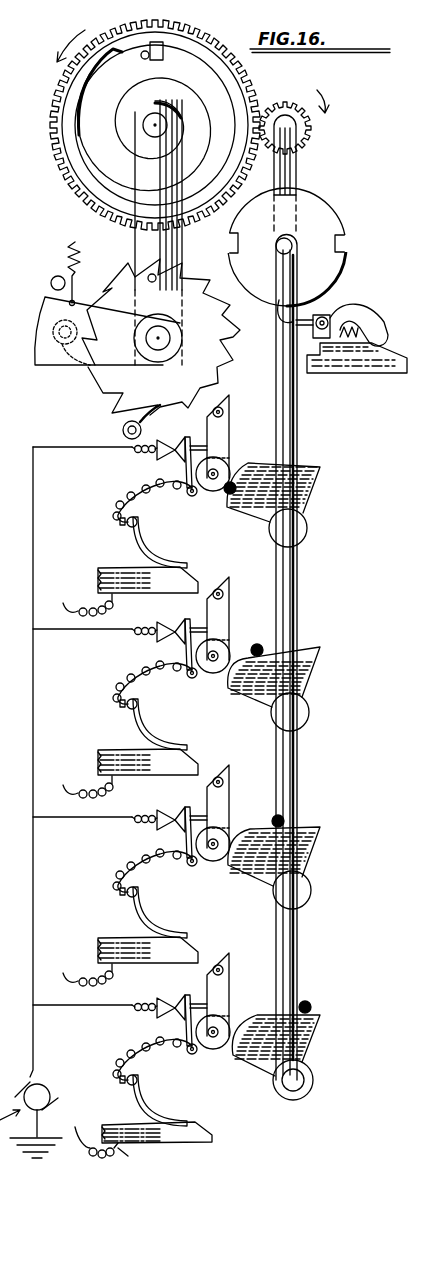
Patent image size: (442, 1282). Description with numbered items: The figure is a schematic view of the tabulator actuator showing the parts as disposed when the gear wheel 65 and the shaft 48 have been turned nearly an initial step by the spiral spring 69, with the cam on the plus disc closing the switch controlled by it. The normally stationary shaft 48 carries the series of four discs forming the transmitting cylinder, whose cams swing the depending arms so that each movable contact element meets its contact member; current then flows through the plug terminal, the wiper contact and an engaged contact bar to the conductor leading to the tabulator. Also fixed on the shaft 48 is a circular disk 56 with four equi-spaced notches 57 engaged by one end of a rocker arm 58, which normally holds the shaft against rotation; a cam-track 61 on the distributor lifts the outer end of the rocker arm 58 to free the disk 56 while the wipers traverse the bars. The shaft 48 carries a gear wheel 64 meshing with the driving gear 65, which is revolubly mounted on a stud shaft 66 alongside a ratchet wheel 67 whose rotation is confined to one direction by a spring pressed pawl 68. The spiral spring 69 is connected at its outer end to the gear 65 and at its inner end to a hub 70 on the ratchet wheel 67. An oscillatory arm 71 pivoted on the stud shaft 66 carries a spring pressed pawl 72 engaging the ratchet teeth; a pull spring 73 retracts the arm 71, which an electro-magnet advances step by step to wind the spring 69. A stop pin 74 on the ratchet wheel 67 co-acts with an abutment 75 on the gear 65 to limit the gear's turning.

The revoluble shaft 48 is at (297, 167).
The circular disk 56 is at (327, 205).
The notch 57 is at (347, 240).
The rocker arm 58 is at (365, 302).
The cam-track 61 is at (370, 358).
The gear wheel 64 is at (295, 100).
The driving gear 65 is at (72, 88).
The stud shaft 66 is at (165, 350).
The ratchet wheel 67 is at (113, 370).
The spring pressed pawl 68 is at (124, 413).
The spiral spring 69 is at (93, 110).
The hub 70 is at (135, 243).
The oscillatory arm 71 is at (47, 298).
The spring pressed pawl 72 is at (60, 360).
The pull spring 73 is at (75, 242).
The stop pin 74 is at (145, 59).
The abutment 75 is at (163, 57).